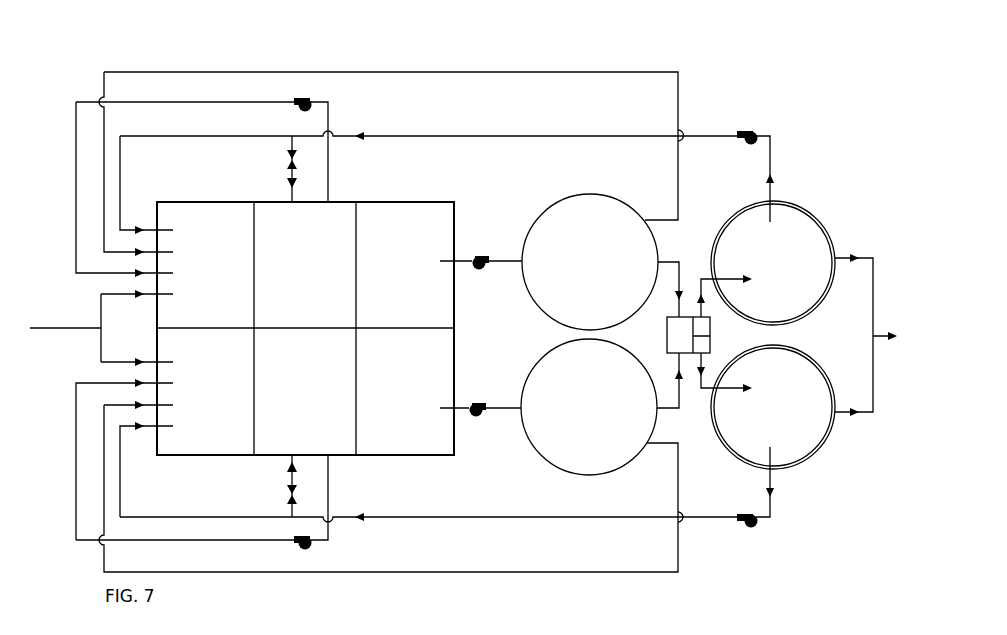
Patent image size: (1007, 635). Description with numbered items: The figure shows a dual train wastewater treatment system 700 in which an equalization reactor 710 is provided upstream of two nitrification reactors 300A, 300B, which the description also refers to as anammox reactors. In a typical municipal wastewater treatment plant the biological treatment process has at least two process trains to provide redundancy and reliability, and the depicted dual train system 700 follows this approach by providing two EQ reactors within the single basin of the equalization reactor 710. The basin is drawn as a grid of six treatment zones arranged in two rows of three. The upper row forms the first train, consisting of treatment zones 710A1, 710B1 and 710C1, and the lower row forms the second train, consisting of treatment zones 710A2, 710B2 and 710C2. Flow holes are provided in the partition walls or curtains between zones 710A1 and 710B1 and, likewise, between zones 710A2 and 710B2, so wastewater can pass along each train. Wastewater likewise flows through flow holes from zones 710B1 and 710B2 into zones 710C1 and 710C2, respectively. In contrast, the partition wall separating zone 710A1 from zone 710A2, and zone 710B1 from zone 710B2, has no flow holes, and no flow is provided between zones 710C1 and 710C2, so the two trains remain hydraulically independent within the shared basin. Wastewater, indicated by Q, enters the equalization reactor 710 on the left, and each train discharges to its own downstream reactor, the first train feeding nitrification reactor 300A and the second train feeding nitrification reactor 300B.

The dual train wastewater treatment system 700 is at (399, 60).
The equalization reactor 710 is at (433, 202).
The treatment zone 710A1 is at (205, 265).
The treatment zone 710B1 is at (305, 265).
The treatment zone 710C1 is at (405, 265).
The treatment zone 710A2 is at (205, 391).
The treatment zone 710B2 is at (305, 391).
The treatment zone 710C2 is at (405, 391).
The nitrification reactor 300A is at (590, 262).
The nitrification reactor 300B is at (589, 407).
The heat input Q is at (101, 328).